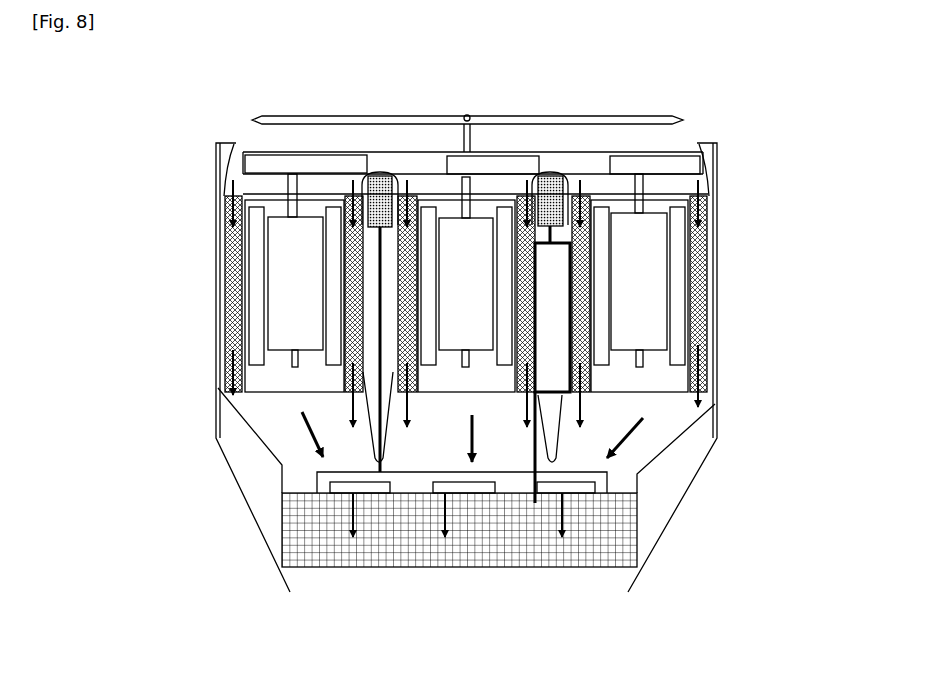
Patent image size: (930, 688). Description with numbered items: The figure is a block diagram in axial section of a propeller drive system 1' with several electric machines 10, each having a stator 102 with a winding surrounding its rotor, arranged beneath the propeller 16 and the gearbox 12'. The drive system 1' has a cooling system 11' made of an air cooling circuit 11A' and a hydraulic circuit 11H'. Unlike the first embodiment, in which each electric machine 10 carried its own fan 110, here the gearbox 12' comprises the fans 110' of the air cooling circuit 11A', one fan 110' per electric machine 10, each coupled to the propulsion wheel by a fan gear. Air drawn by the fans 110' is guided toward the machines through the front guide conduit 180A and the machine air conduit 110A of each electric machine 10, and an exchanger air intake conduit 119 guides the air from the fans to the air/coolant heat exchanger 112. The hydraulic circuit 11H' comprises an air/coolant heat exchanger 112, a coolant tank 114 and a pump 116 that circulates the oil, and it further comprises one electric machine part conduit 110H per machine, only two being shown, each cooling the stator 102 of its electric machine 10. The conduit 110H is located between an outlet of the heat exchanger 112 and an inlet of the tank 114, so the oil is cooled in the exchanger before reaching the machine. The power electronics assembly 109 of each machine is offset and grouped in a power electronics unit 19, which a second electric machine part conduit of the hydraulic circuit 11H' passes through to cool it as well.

The propeller drive system 1' is at (549, 370).
The electric machine 10 is at (634, 238).
The stator 102 is at (258, 253).
The power electronics assembly 109 is at (558, 485).
The fan 110 is at (361, 303).
The machine air conduit 110A is at (702, 340).
The electric machine part conduit 110H is at (572, 302).
The fan 110' is at (631, 169).
The air/coolant heat exchanger 112 is at (618, 537).
The coolant tank 114 is at (552, 183).
The pump 116 is at (372, 186).
The exchanger air intake conduit 119 is at (645, 461).
The cooling system 11' is at (544, 367).
The air cooling circuit 11A' is at (676, 432).
The hydraulic circuit 11H' is at (356, 526).
The gearbox 12' is at (475, 141).
The propeller 16 is at (305, 121).
The front guide conduit 180A is at (310, 180).
The power electronics unit 19 is at (600, 484).